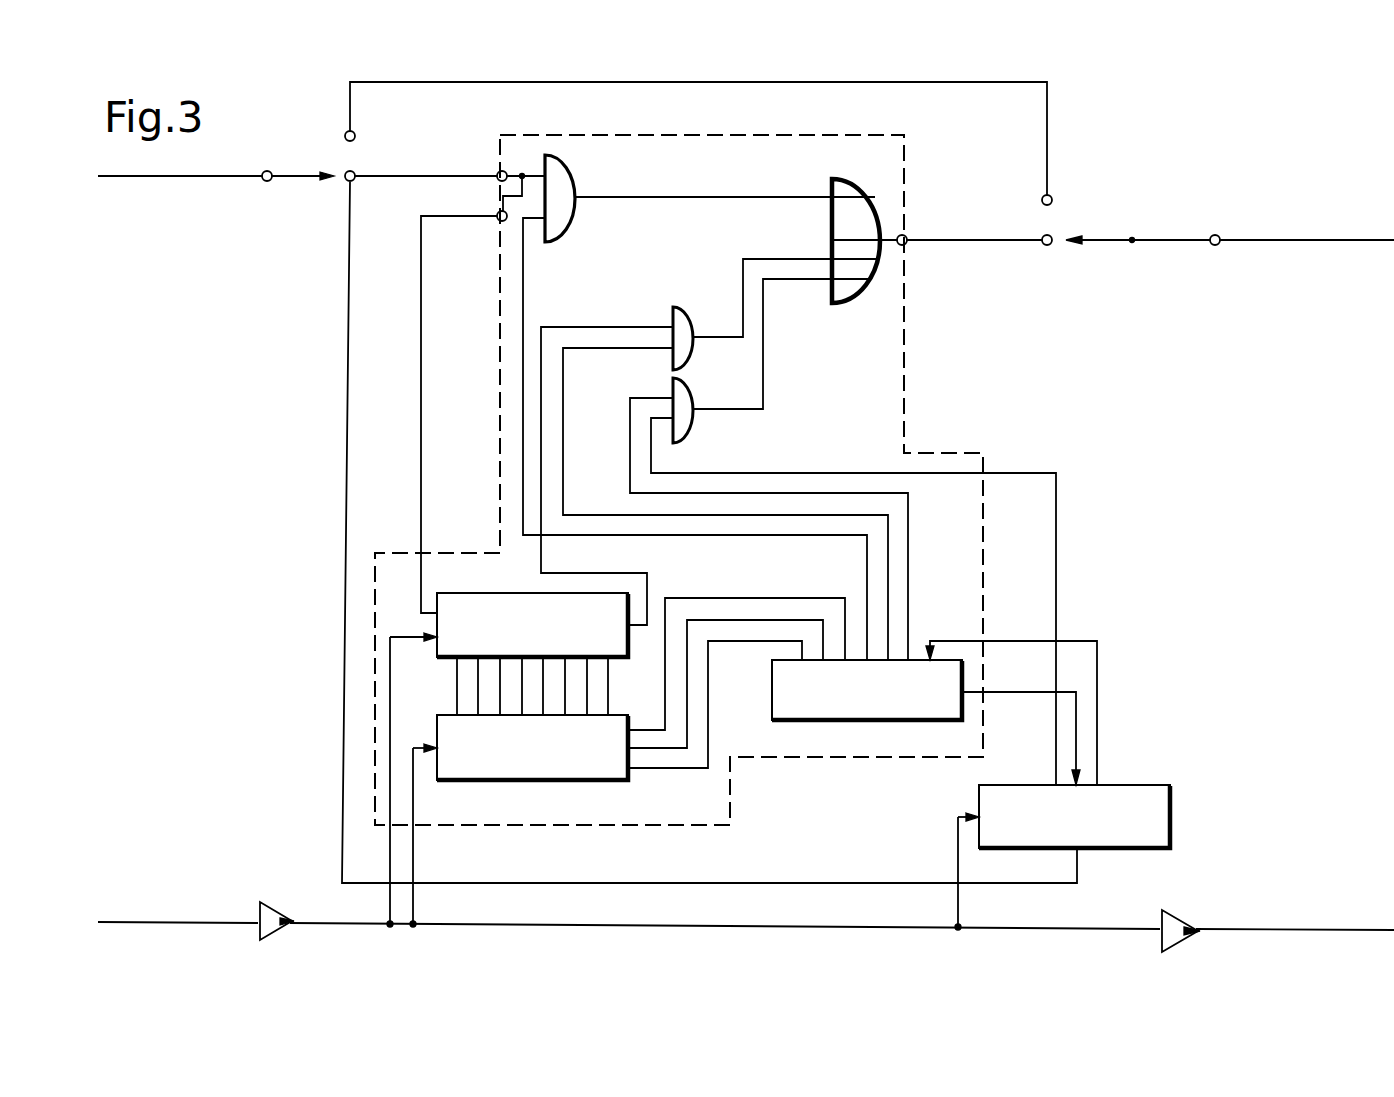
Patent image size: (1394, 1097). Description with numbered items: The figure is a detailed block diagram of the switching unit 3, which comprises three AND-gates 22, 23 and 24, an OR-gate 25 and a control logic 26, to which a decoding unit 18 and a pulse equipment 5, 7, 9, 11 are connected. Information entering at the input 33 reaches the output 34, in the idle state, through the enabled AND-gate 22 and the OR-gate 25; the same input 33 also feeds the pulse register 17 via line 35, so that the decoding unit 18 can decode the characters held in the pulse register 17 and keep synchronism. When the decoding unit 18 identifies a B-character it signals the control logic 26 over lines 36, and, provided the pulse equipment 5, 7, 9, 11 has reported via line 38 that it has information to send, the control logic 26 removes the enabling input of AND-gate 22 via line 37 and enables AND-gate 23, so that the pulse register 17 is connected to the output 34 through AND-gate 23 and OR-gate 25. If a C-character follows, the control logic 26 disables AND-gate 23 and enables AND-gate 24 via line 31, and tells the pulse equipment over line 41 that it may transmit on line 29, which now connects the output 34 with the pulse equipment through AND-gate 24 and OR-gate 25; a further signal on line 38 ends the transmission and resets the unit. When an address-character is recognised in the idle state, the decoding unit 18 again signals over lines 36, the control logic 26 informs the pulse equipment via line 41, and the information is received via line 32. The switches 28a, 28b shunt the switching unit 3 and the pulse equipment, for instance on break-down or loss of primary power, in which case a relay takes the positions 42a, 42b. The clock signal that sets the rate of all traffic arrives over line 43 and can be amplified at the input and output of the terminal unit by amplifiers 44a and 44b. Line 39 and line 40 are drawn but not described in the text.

The switching unit 3 is at (886, 376).
The pulse equipment 5 is at (1130, 816).
The pulse equipment 7 is at (1130, 816).
The pulse equipment 9 is at (1130, 816).
The pulse equipment 11 is at (1172, 803).
The pulse register 17 is at (470, 592).
The decoding unit 18 is at (575, 782).
The AND-gate 22 is at (574, 172).
The AND-gate 23 is at (680, 305).
The AND-gate 24 is at (690, 426).
The OR-gate 25 is at (848, 186).
The control logic 26 is at (857, 722).
The switch 28a is at (305, 180).
The switch 28b is at (1100, 244).
The line 29 is at (1057, 545).
The line 31 is at (908, 538).
The line 32 is at (738, 884).
The input 33 is at (501, 171).
The output 34 is at (905, 234).
The line 35 is at (421, 437).
The lines 36 is at (655, 772).
The line 37 is at (840, 538).
The line 38 is at (1098, 668).
The line from register to gate 23 39 is at (653, 602).
The line from gate 24 40 is at (772, 510).
The line 41 is at (1000, 692).
The position 42a is at (696, 138).
The position 42b is at (1074, 203).
The line 43 is at (1372, 932).
The amplifier 44a is at (288, 930).
The amplifier 44b is at (1186, 914).